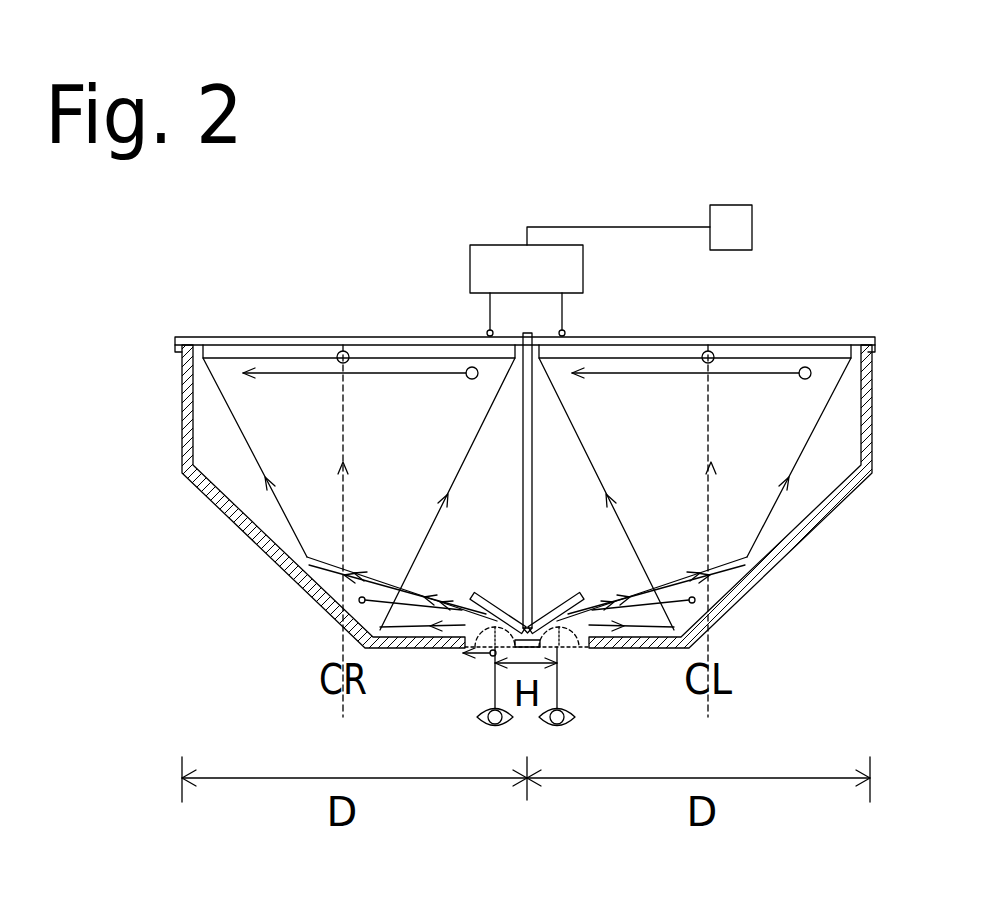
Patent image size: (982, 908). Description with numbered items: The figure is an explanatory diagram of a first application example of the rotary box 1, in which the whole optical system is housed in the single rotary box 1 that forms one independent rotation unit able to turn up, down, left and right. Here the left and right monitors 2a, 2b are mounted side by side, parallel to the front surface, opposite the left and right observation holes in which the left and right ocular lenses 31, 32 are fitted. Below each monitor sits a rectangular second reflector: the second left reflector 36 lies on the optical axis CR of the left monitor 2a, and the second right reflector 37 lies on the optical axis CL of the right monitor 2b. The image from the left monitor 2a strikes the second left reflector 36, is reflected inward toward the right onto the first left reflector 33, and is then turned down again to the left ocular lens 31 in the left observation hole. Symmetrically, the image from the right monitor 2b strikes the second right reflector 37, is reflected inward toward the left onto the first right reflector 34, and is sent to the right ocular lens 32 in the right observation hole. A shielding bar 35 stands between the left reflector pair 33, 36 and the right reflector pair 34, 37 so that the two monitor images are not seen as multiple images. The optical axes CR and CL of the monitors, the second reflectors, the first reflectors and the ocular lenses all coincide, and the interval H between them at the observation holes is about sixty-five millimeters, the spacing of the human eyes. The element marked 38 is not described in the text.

The rotary box 1 is at (228, 511).
The left monitor 2a is at (237, 350).
The right monitor 2b is at (818, 342).
The left ocular lens 31 is at (477, 656).
The right ocular lens 32 is at (580, 656).
The first left reflector 33 is at (483, 600).
The first right reflector 34 is at (570, 600).
The shielding bar 35 is at (535, 438).
The second left reflector 36 is at (325, 596).
The second right reflector 37 is at (733, 596).
The controller 38 is at (492, 253).